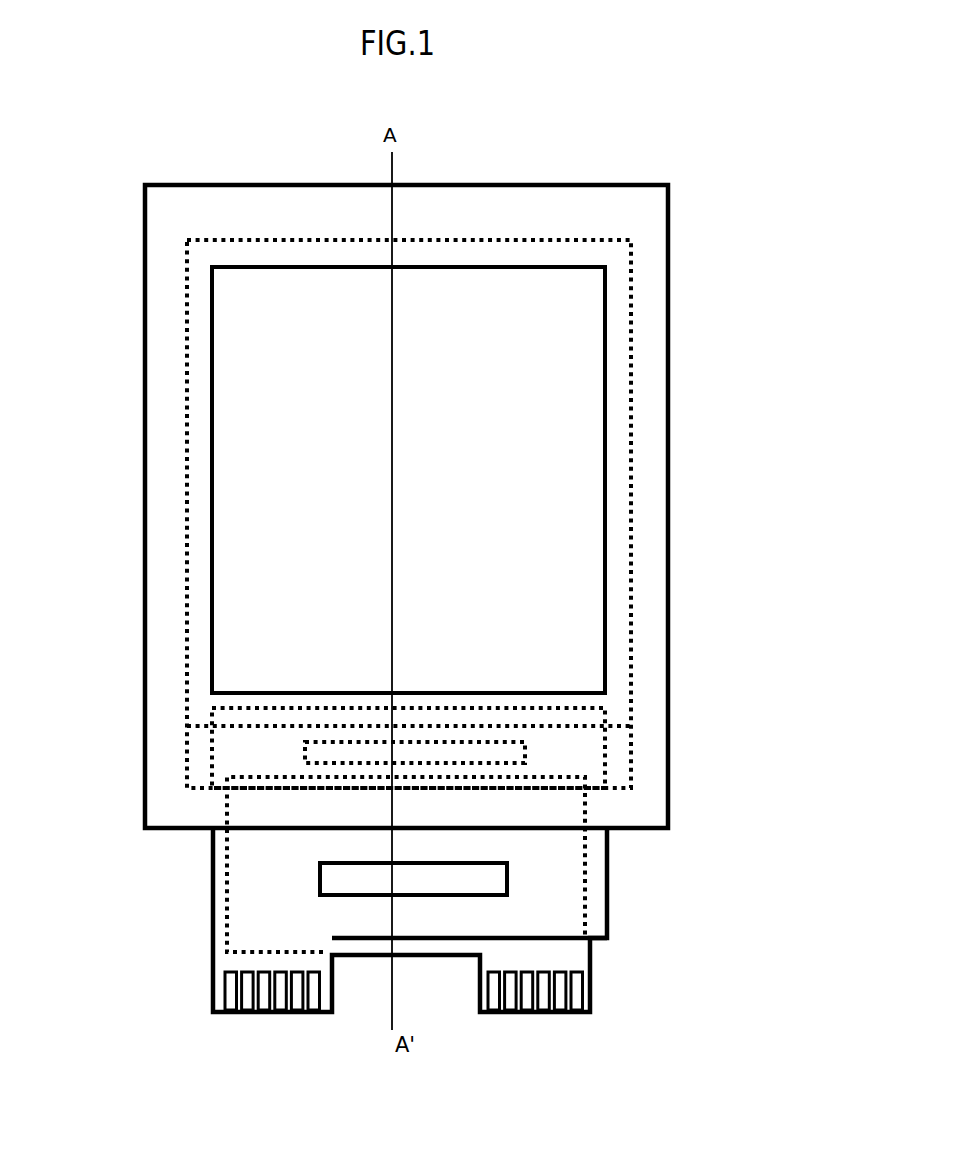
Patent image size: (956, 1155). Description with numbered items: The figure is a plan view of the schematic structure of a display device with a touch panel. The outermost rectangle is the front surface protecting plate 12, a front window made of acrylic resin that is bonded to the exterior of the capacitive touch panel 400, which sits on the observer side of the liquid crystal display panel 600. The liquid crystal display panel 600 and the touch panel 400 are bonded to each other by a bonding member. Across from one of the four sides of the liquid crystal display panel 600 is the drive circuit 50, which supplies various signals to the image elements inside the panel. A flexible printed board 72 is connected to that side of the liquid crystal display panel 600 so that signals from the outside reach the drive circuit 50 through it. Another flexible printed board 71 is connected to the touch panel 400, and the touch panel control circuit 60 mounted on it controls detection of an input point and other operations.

The front surface protecting plate 12 is at (566, 210).
The capacitive touch panel 400 is at (614, 608).
The liquid crystal display panel 600 is at (612, 733).
The drive circuit 50 is at (525, 750).
The touch panel control circuit 60 is at (440, 898).
The flexible printed board 71 is at (220, 962).
The flexible printed board 72 is at (548, 958).